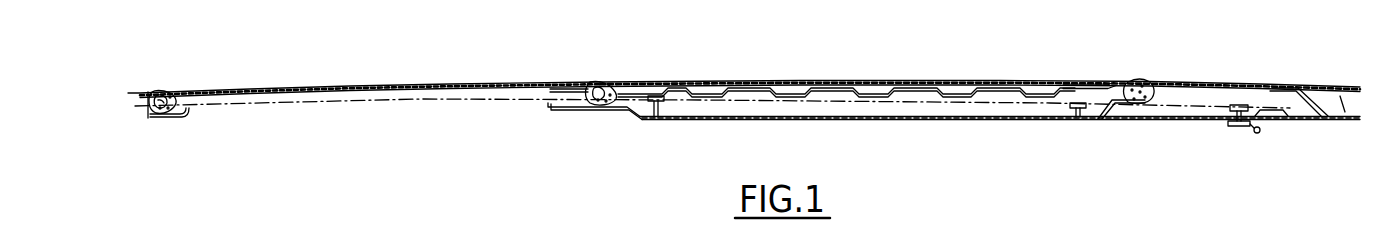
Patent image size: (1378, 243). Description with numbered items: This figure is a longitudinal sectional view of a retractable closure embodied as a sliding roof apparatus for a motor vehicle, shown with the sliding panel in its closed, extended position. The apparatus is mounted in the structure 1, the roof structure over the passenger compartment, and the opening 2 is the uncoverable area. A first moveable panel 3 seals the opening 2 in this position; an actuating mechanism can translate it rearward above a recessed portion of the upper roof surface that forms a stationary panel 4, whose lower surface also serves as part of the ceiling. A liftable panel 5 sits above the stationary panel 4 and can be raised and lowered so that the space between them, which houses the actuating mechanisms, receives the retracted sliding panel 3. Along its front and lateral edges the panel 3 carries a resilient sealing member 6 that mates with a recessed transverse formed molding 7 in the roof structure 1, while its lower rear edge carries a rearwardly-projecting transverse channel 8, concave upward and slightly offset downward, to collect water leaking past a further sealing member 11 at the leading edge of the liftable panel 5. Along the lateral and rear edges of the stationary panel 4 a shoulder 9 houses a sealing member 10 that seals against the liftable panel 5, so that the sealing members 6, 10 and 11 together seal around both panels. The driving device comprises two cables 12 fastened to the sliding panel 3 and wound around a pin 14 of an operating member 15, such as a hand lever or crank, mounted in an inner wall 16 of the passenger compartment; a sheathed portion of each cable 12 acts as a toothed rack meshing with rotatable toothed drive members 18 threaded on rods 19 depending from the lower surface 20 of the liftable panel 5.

The structure 1 is at (149, 120).
The opening 2 is at (398, 112).
The first moveable panel 3 is at (301, 83).
The stationary panel 4 is at (976, 122).
The liftable panel 5 is at (801, 82).
The resilient sealing member 6 is at (159, 88).
The recessed transverse formed molding 7 is at (182, 120).
The rearwardly-projecting transverse channel 8 is at (606, 108).
The shoulder 9 is at (1138, 104).
The sealing member 10 is at (1138, 80).
The further sealing member 11 is at (599, 81).
The cables 12 is at (343, 104).
The pin 14 is at (1238, 103).
The operating member 15 is at (1243, 127).
The inner wall 16 is at (1292, 87).
The drive members 18 is at (657, 113).
The rods 19 is at (1065, 86).
The lower surface 20 is at (790, 96).